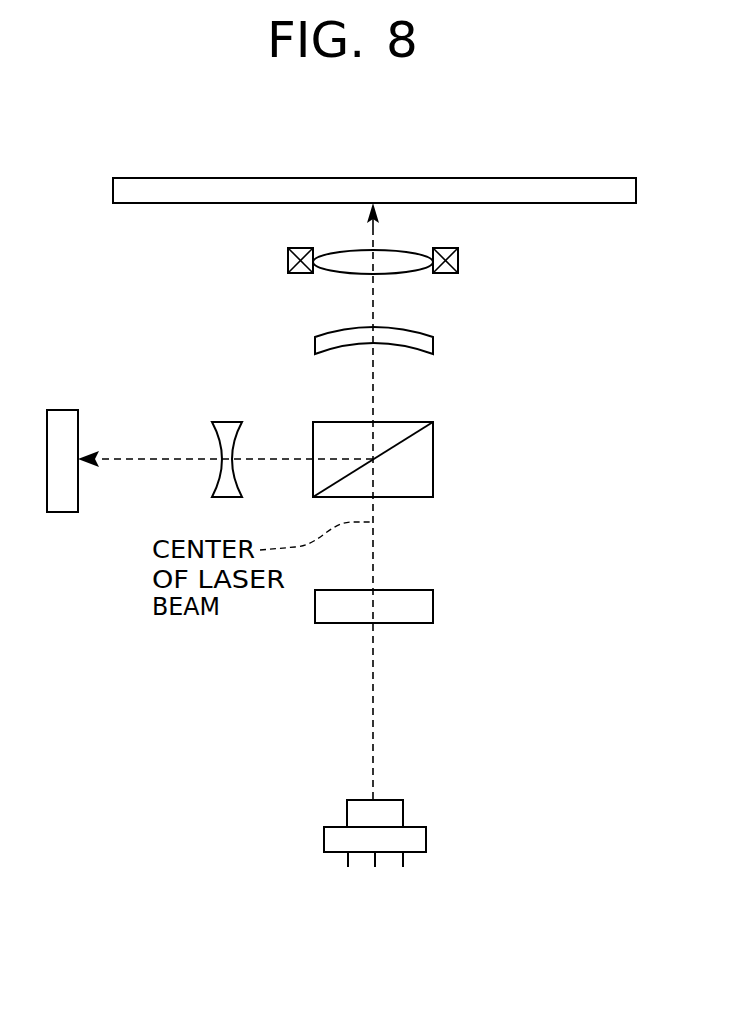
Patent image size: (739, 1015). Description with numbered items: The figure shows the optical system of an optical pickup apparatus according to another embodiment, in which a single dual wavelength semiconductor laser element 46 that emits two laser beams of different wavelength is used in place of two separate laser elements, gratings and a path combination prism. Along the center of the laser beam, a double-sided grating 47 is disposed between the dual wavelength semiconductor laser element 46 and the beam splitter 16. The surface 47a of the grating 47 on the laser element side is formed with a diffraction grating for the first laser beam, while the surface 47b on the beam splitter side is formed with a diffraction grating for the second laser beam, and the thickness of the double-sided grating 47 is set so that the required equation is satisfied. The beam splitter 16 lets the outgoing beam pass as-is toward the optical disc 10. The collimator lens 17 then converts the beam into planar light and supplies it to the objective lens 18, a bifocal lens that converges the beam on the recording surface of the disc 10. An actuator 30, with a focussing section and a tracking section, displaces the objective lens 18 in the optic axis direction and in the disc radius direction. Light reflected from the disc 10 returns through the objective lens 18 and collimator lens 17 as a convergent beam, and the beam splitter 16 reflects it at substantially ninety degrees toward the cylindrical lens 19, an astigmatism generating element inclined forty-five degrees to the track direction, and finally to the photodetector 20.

The optical disc 10 is at (590, 178).
The beam splitter 16 is at (433, 468).
The collimator lens 17 is at (433, 347).
The objective lens 18 is at (352, 274).
The cylindrical lens 19 is at (222, 422).
The photodetector 20 is at (62, 410).
The actuator 30 is at (288, 262).
The dual wavelength semiconductor laser element 46 is at (426, 838).
The double-sided grating 47 is at (427, 606).
The surface of the grating on the laser element side 47a is at (415, 623).
The surface of the grating on the beam splitter side 47b is at (412, 590).